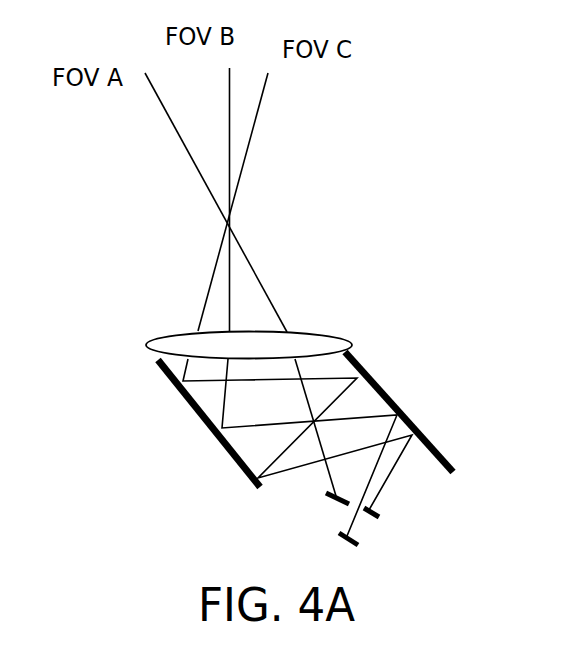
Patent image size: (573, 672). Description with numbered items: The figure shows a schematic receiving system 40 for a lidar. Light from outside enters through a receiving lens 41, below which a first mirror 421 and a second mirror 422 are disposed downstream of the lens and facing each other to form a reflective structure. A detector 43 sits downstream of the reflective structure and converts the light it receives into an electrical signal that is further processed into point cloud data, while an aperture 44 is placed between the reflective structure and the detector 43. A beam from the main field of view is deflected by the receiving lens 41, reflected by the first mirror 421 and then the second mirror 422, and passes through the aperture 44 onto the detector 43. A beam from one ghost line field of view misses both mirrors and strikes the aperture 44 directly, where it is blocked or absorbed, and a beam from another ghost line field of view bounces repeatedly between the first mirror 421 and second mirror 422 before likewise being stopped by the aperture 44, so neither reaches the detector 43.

The receiving system 40 is at (359, 108).
The receiving lens 41 is at (356, 345).
The first mirror 421 is at (255, 488).
The second mirror 422 is at (380, 383).
The detector 43 is at (338, 539).
The aperture 44 is at (379, 515).